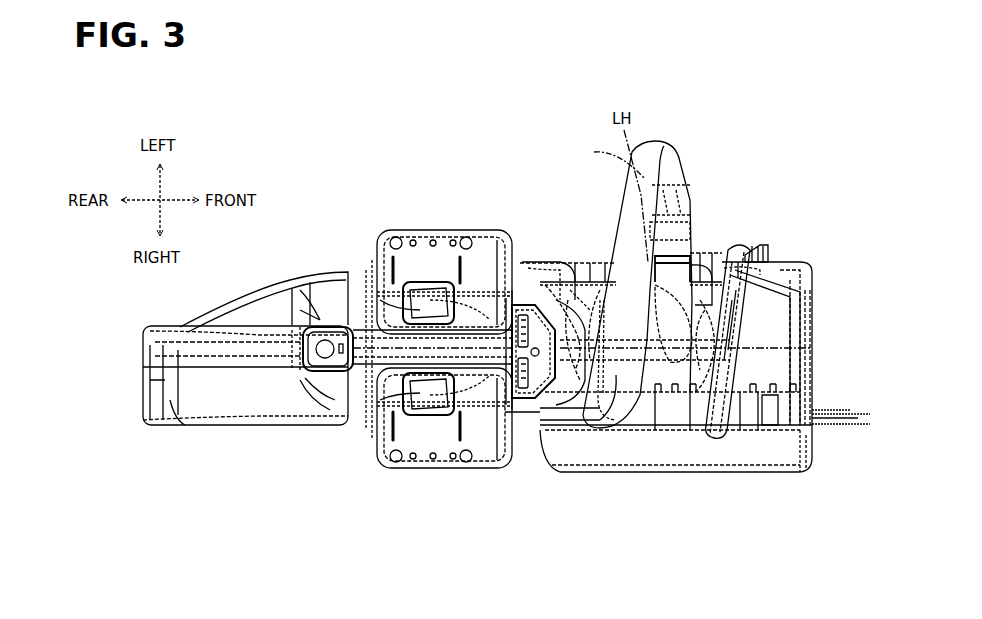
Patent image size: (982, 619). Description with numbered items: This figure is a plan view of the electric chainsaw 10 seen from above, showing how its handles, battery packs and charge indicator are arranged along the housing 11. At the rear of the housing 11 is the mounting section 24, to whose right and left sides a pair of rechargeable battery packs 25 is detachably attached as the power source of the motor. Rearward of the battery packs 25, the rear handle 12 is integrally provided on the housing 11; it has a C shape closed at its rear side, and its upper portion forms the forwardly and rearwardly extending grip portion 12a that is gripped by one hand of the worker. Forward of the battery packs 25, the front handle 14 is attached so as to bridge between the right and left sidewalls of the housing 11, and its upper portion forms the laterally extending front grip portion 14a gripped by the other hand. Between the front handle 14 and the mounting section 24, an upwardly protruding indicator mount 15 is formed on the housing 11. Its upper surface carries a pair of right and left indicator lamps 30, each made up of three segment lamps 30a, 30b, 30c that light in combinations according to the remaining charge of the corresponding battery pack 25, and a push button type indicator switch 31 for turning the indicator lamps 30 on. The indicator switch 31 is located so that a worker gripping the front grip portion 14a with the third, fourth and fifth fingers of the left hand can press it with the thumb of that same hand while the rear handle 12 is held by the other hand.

The electric chainsaw 10 is at (806, 186).
The housing 11 is at (773, 308).
The rear handle 12 is at (170, 358).
The grip portion 12a is at (237, 346).
The front handle 14 is at (672, 195).
The front grip portion 14a is at (650, 224).
The indicator mount 15 is at (533, 256).
The mounting section 24 is at (392, 345).
The battery packs 25 is at (396, 236).
The indicator lamps 30 is at (505, 402).
The segment lamp 30a is at (506, 240).
The segment lamp 30b is at (500, 240).
The segment lamp 30c is at (496, 240).
The indicator switch 31 is at (540, 406).